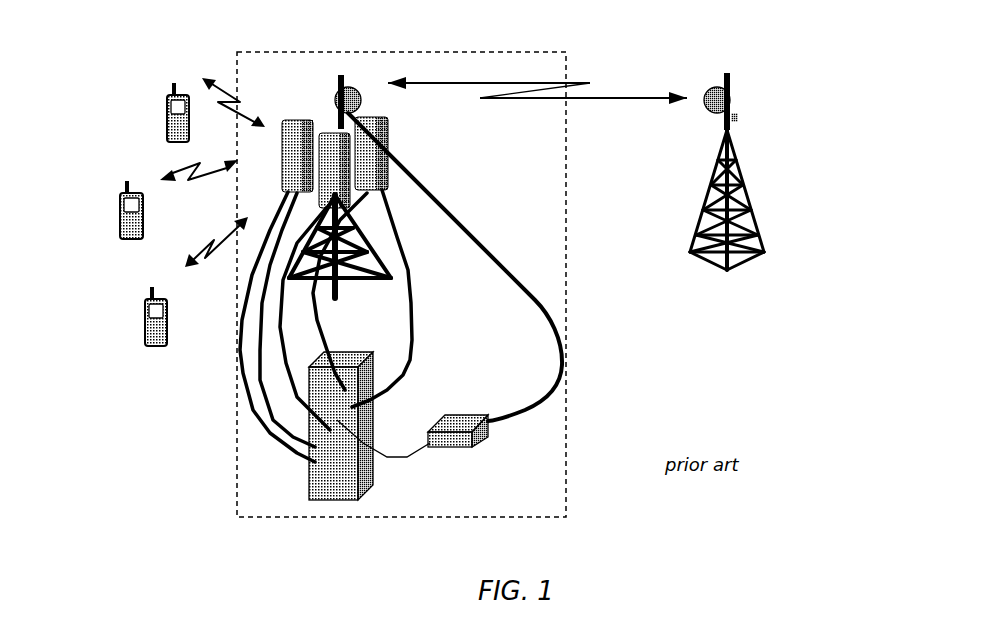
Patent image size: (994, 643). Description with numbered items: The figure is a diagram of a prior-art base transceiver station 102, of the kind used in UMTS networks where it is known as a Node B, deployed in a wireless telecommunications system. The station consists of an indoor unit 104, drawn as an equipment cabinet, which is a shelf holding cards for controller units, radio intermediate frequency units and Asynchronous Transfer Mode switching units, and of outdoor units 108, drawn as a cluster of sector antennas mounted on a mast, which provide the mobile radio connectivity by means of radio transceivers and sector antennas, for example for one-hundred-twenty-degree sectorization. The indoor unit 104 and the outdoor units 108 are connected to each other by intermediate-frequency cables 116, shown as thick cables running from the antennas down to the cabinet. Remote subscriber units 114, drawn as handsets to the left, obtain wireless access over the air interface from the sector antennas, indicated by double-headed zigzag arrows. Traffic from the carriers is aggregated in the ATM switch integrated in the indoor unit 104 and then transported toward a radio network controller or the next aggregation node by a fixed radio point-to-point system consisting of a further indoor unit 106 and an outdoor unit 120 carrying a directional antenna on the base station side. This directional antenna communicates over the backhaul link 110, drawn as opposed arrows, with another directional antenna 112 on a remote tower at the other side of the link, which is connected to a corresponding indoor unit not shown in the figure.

The base transceiver station 102 is at (253, 485).
The indoor unit 104 is at (365, 470).
The indoor unit of the point-to-point system 106 is at (460, 440).
The outdoor units 108 is at (298, 127).
The link 110 is at (517, 83).
The directional antenna 112 is at (730, 93).
The remote subscriber units 114 is at (175, 128).
The intermediate-frequency cables 116 is at (412, 313).
The outdoor unit of the point-to-point system 120 is at (355, 93).